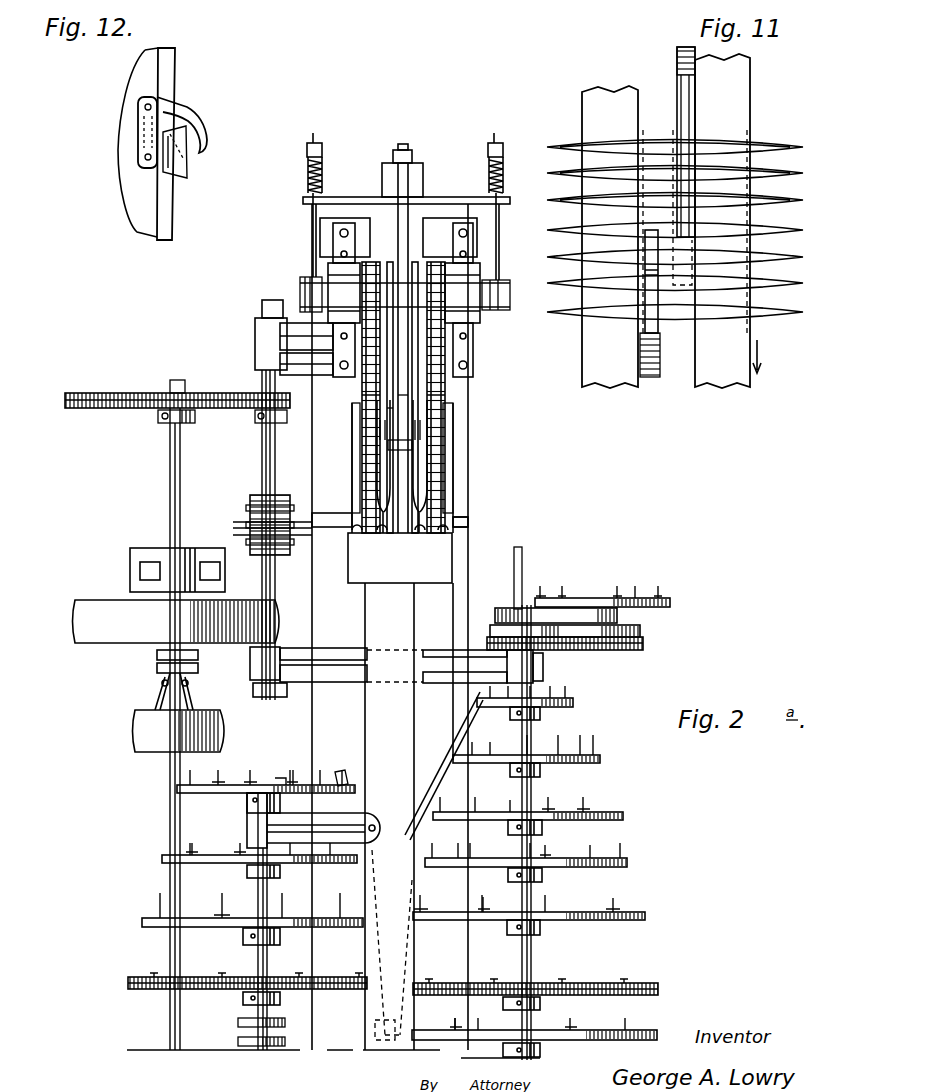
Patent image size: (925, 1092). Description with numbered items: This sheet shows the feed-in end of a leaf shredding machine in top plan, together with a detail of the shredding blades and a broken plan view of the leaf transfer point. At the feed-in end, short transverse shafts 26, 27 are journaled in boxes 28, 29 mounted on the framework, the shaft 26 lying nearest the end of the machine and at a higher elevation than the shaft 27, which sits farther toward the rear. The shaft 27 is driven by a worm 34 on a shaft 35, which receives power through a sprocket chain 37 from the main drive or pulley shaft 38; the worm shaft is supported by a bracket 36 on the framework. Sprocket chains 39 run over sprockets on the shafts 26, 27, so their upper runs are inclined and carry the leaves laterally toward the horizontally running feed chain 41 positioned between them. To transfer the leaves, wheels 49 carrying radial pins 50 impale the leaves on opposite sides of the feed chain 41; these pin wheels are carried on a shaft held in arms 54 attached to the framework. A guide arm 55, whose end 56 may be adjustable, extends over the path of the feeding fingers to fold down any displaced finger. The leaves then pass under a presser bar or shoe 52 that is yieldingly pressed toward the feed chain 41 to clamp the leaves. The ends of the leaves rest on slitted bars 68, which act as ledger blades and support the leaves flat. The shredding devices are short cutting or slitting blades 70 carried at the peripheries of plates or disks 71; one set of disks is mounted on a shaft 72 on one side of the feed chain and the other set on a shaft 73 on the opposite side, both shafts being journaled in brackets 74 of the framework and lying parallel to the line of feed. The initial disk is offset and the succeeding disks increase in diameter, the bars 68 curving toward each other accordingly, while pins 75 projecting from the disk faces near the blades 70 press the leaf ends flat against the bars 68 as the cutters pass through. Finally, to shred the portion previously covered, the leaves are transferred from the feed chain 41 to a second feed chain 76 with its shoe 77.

In FIG. 2A, the shaft 26 is at (305, 290).
In FIG. 2A, the shaft 27 is at (242, 531).
In FIG. 2A, the box 28 is at (488, 333).
In FIG. 2A, the box 29 is at (468, 535).
In FIG. 2A, the worm 34 is at (250, 503).
In FIG. 2A, the shaft 35 is at (262, 451).
In FIG. 2A, the bracket 36 is at (262, 343).
In FIG. 2A, the sprocket chain 37 is at (225, 397).
In FIG. 2A, the main drive or pulley shaft 38 is at (170, 483).
In FIG. 2A, the sprocket chains 39 is at (365, 390).
In FIG. 11, the feed chain 41 is at (677, 78).
In FIG. 2A, the feed chain 41 is at (412, 396).
In FIG. 2A, the wheels 49 is at (388, 444).
In FIG. 2A, the pins 50 is at (389, 420).
In FIG. 11, the presser bar or shoe 52 is at (690, 105).
In FIG. 2A, the arms 54 is at (379, 490).
In FIG. 2A, the guide arm 55 is at (356, 456).
In FIG. 2A, the end of guide arm 56 is at (355, 425).
In FIG. 2A, the bars 68 is at (470, 716).
In FIG. 12, the cutting or slitting blades 70 is at (195, 122).
In FIG. 2A, the cutting or slitting blades 70 is at (640, 592).
In FIG. 12, the plates or disks 71 is at (172, 222).
In FIG. 2A, the plates or disks 71 is at (670, 603).
In FIG. 2A, the shaft 72 is at (522, 788).
In FIG. 2A, the shaft 73 is at (255, 953).
In FIG. 2A, the brackets 74 is at (449, 670).
In FIG. 12, the pins 75 is at (183, 180).
In FIG. 2A, the pins 75 is at (541, 589).
In FIG. 11, the second feed chain 76 is at (660, 370).
In FIG. 11, the shoe 77 is at (660, 318).